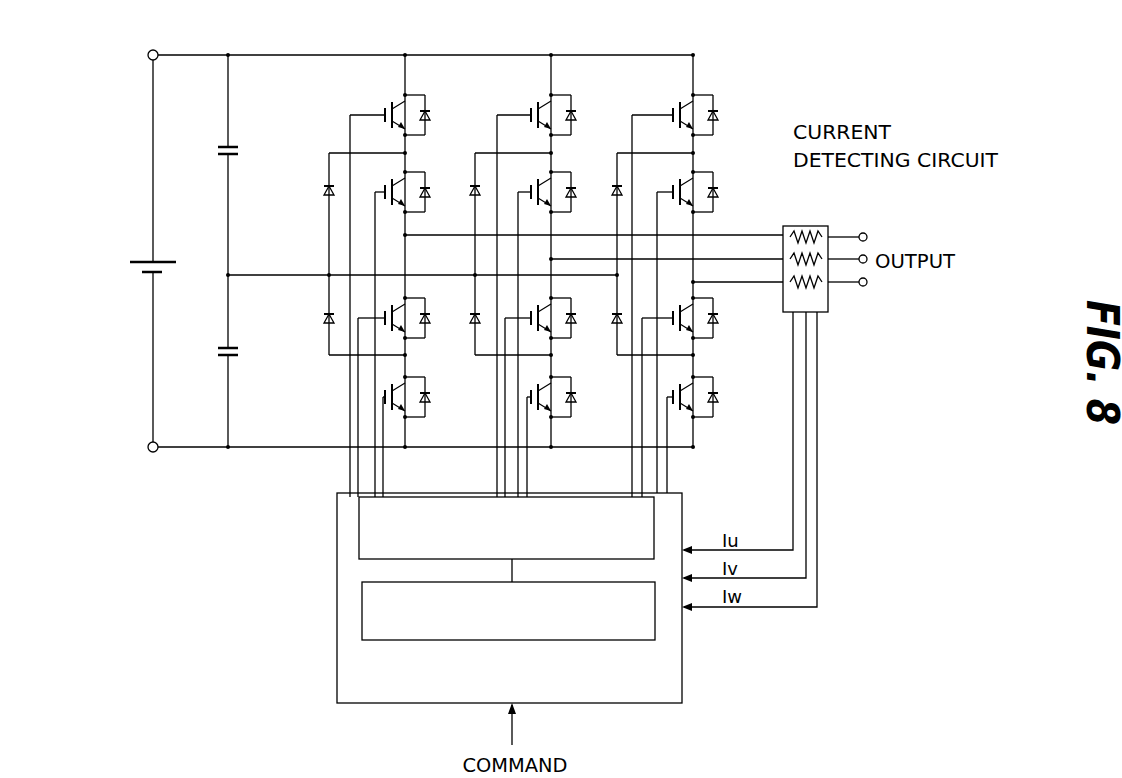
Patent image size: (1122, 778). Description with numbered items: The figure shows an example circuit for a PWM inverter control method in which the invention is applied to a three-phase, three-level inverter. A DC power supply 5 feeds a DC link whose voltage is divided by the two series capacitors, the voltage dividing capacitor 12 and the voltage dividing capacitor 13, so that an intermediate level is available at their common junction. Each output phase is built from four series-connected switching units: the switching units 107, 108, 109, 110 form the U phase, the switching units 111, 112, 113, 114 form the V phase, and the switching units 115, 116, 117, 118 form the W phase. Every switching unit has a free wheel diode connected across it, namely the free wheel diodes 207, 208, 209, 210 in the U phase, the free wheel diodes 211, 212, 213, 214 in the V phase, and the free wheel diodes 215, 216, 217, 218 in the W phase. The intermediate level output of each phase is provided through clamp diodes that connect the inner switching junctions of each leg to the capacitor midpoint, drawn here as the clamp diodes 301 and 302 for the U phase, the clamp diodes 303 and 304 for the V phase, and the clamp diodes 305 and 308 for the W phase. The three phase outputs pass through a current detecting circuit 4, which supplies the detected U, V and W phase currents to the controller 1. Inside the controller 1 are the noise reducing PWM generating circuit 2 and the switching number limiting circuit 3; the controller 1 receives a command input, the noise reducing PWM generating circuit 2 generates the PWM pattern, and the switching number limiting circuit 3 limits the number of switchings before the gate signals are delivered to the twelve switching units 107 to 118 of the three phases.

The controller 1 is at (509, 598).
The noise reducing PWM generating circuit 2 is at (508, 611).
The switching number limiting circuit 3 is at (506, 528).
The current detecting circuit 4 is at (797, 226).
The DC power supply 5 is at (140, 262).
The voltage dividing capacitor 12 is at (227, 147).
The voltage dividing capacitor 13 is at (227, 351).
The switching unit 107 is at (387, 102).
The switching unit 108 is at (388, 180).
The switching unit 109 is at (388, 311).
The switching unit 110 is at (386, 390).
The switching unit 111 is at (533, 102).
The switching unit 112 is at (535, 181).
The switching unit 113 is at (535, 307).
The switching unit 114 is at (530, 397).
The switching unit 115 is at (676, 102).
The switching unit 116 is at (676, 182).
The switching unit 117 is at (675, 310).
The switching unit 118 is at (674, 402).
The free wheel diode 207 is at (428, 113).
The free wheel diode 208 is at (428, 190).
The free wheel diode 209 is at (429, 318).
The free wheel diode 210 is at (430, 400).
The free wheel diode 211 is at (574, 113).
The free wheel diode 212 is at (574, 190).
The free wheel diode 213 is at (575, 318).
The free wheel diode 214 is at (575, 397).
The free wheel diode 215 is at (716, 113).
The free wheel diode 216 is at (716, 191).
The free wheel diode 217 is at (717, 320).
The free wheel diode 218 is at (717, 399).
The clamp diode 301 is at (327, 196).
The clamp diode 302 is at (327, 326).
The clamp diode 303 is at (473, 196).
The clamp diode 304 is at (473, 326).
The clamp diode 305 is at (601, 214).
The clamp diode 308 is at (615, 326).